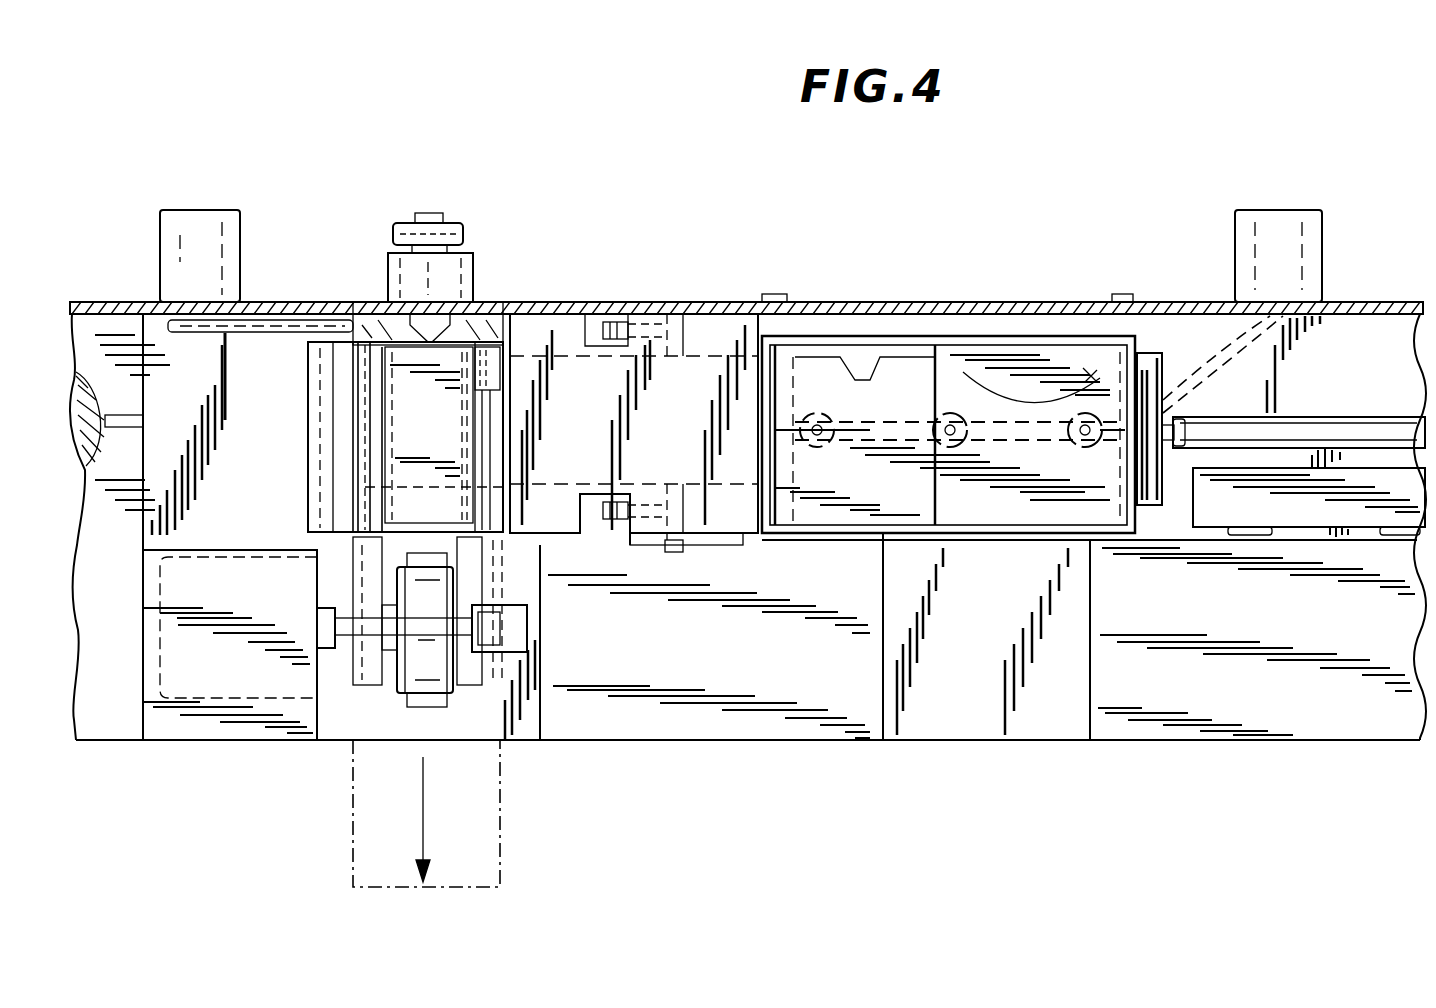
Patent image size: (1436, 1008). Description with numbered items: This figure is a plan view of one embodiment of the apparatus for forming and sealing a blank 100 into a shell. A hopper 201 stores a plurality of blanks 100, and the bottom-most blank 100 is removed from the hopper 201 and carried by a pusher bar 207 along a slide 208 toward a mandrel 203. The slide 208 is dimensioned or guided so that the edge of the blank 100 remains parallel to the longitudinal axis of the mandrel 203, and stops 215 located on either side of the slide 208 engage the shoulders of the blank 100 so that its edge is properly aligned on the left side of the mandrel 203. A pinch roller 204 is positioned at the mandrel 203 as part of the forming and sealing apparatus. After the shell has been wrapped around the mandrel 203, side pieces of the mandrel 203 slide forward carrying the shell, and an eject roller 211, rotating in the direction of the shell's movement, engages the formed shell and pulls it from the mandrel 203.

The blank 100 is at (1043, 512).
The hopper 201 is at (831, 326).
The mandrel 203 is at (408, 428).
The pinch roller 204 is at (298, 490).
The pusher bar 207 is at (1185, 380).
The slide 208 is at (717, 558).
The eject roller 211 is at (413, 715).
The stops 215 is at (604, 346).